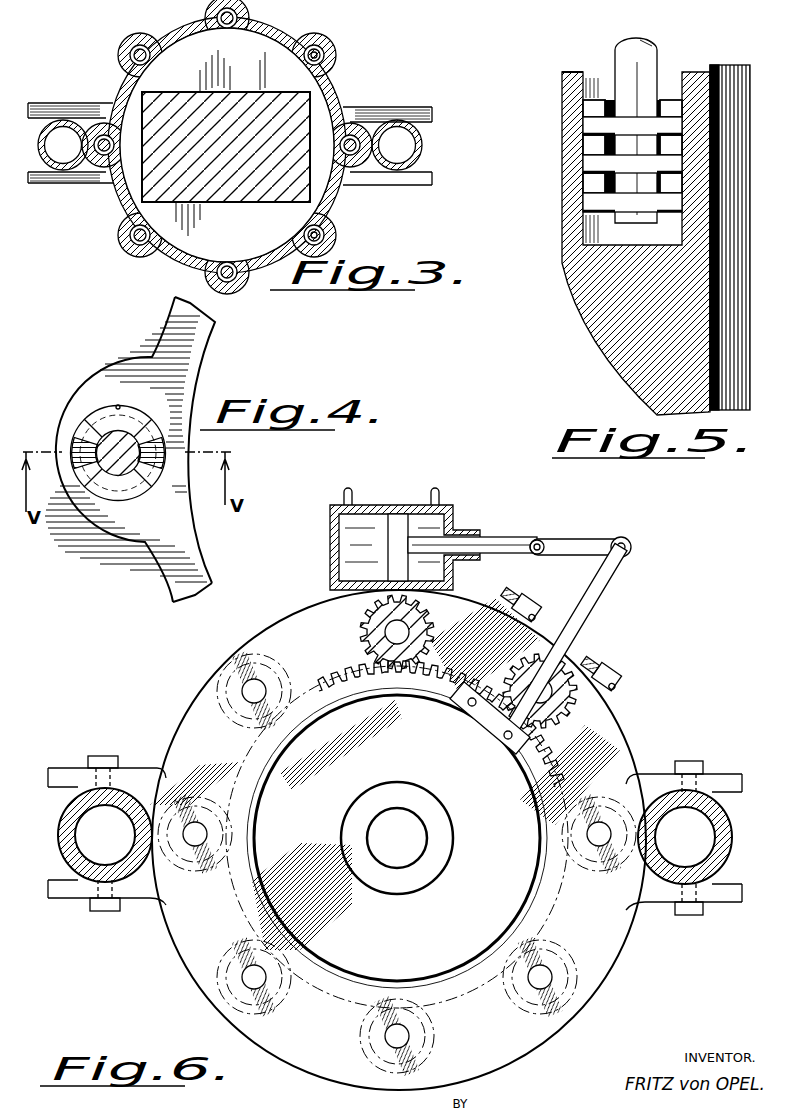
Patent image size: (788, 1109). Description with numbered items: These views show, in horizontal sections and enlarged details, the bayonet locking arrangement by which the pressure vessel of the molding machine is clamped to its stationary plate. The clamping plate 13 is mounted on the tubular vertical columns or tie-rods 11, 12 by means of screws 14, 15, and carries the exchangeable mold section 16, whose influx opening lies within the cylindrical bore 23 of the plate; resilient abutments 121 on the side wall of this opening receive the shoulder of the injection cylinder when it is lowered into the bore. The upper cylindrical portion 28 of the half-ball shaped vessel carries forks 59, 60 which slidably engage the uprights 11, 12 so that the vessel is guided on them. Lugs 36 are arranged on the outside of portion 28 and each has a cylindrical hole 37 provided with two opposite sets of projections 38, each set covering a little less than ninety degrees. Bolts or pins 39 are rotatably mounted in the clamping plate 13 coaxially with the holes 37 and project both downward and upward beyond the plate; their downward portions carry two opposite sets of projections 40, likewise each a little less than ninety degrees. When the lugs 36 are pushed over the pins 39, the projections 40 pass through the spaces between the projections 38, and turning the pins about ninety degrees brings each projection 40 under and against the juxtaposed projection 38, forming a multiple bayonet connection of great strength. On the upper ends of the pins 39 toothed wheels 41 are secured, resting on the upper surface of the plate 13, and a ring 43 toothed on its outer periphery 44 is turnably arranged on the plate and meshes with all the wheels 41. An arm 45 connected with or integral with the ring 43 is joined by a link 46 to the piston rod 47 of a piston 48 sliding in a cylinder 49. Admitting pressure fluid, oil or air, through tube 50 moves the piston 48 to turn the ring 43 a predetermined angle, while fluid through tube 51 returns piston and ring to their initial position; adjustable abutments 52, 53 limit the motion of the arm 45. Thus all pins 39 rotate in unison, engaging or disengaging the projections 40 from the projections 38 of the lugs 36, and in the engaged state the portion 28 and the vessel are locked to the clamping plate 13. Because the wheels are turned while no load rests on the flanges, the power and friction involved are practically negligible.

In FIG. 3, the vertical column or tie-rod 11 is at (45, 152).
In FIG. 6, the vertical column or tie-rod 11 is at (58, 826).
In FIG. 3, the vertical column or tie-rod 12 is at (424, 148).
In FIG. 6, the vertical column or tie-rod 12 is at (733, 842).
In FIG. 3, the clamping plate 13 is at (360, 114).
In FIG. 6, the clamping plate 13 is at (630, 746).
In FIG. 6, the screw 14 is at (103, 912).
In FIG. 6, the screw 15 is at (104, 764).
In FIG. 3, the mold section 16 is at (305, 108).
In FIG. 6, the cylindrical bore 23 is at (424, 792).
In FIG. 4, the upper cylindrical portion 28 is at (204, 572).
In FIG. 5, the upper cylindrical portion 28 is at (735, 70).
In FIG. 3, the lug 36 is at (247, 19).
In FIG. 4, the lug 36 is at (97, 530).
In FIG. 5, the lug 36 is at (572, 199).
In FIG. 3, the cylindrical hole 37 is at (152, 42).
In FIG. 4, the cylindrical hole 37 is at (117, 405).
In FIG. 5, the cylindrical hole 37 is at (580, 84).
In FIG. 3, the projection 38 is at (325, 235).
In FIG. 4, the projection 38 is at (118, 451).
In FIG. 5, the projection 38 is at (670, 92).
In FIG. 3, the bolt or pin 39 is at (320, 46).
In FIG. 4, the bolt or pin 39 is at (80, 432).
In FIG. 5, the bolt or pin 39 is at (615, 57).
In FIG. 6, the bolt or pin 39 is at (397, 632).
In FIG. 4, the projection 40 is at (118, 459).
In FIG. 5, the projection 40 is at (600, 123).
In FIG. 6, the toothed wheel 41 is at (332, 620).
In FIG. 6, the ring 43 is at (270, 760).
In FIG. 6, the toothed outer periphery 44 is at (356, 680).
In FIG. 6, the arm 45 is at (592, 605).
In FIG. 6, the link 46 is at (578, 540).
In FIG. 6, the piston rod 47 is at (496, 538).
In FIG. 6, the piston 48 is at (401, 532).
In FIG. 6, the cylinder 49 is at (397, 505).
In FIG. 6, the tube 50 is at (440, 500).
In FIG. 6, the tube 51 is at (345, 500).
In FIG. 6, the abutment 52 is at (517, 596).
In FIG. 6, the abutment 53 is at (607, 678).
In FIG. 3, the fork 59 is at (86, 184).
In FIG. 3, the fork 60 is at (394, 186).
In FIG. 6, the resilient abutment 121 is at (440, 848).